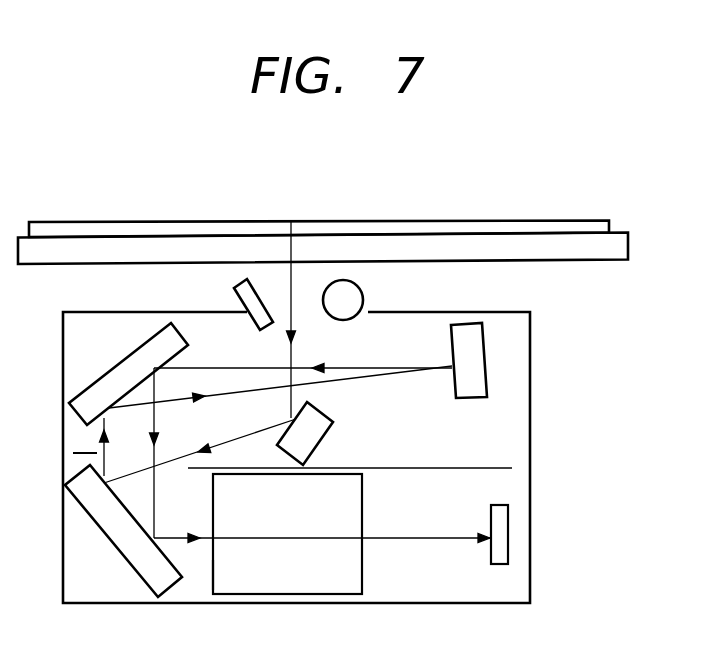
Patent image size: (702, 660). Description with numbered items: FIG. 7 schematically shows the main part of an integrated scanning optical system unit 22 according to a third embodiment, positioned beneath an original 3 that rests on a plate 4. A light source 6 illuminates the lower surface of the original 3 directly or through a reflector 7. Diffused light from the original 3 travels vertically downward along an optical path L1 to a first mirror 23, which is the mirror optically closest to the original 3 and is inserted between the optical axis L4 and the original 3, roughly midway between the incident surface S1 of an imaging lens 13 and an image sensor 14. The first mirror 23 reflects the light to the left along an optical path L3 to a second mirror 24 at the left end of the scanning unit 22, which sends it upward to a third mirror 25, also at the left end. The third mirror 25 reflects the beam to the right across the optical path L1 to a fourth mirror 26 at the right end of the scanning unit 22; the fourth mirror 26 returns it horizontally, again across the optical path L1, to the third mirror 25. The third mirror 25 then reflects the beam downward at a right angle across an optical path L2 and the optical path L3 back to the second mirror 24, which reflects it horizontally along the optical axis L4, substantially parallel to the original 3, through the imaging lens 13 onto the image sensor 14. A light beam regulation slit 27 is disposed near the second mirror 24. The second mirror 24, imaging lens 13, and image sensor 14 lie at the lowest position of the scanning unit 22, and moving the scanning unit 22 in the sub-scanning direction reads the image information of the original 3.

The original 3 is at (405, 224).
The base plate 4 is at (605, 245).
The light source 6 is at (352, 291).
The reflector 7 is at (248, 296).
The imaging lens 13 is at (343, 564).
The image sensor 14 is at (495, 555).
The integrated scanning optical system unit 22 is at (532, 548).
The first mirror 23 is at (307, 433).
The second mirror 24 is at (143, 568).
The third mirror 25 is at (128, 369).
The fourth mirror 26 is at (470, 385).
The light beam regulation slit 27 is at (395, 466).
The optical path L1 is at (292, 320).
The optical path L2 is at (229, 397).
The optical path L3 is at (168, 462).
The optical axis L4 is at (412, 538).
The incident surface S1 is at (213, 576).